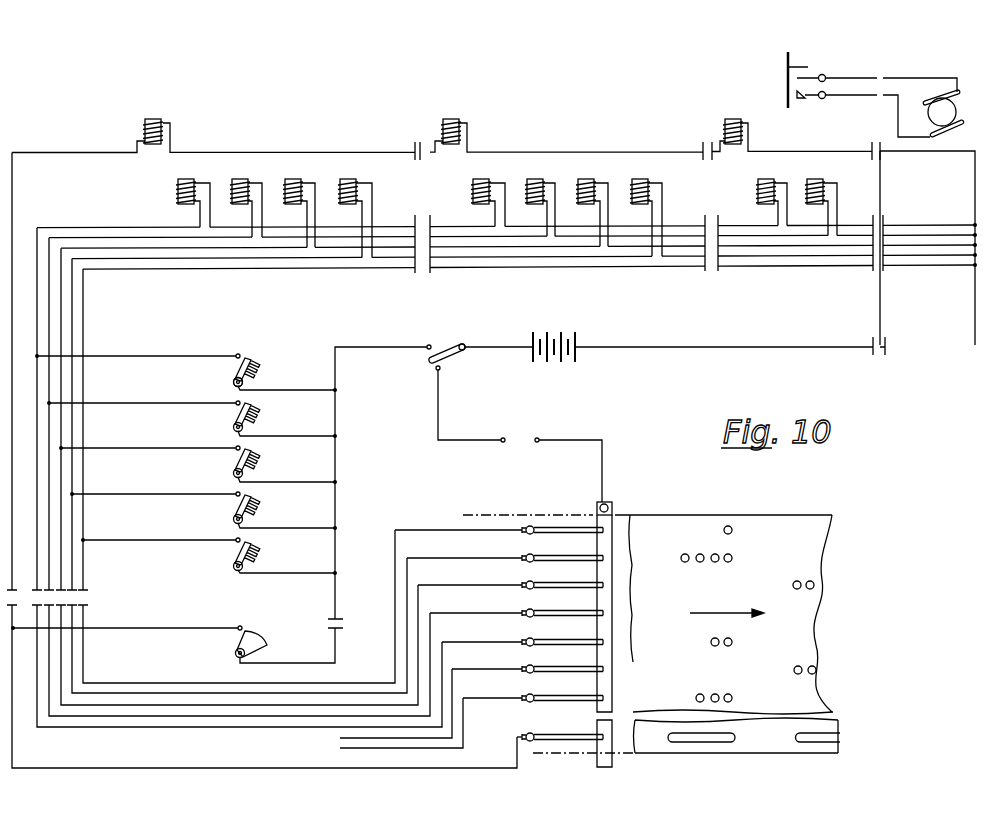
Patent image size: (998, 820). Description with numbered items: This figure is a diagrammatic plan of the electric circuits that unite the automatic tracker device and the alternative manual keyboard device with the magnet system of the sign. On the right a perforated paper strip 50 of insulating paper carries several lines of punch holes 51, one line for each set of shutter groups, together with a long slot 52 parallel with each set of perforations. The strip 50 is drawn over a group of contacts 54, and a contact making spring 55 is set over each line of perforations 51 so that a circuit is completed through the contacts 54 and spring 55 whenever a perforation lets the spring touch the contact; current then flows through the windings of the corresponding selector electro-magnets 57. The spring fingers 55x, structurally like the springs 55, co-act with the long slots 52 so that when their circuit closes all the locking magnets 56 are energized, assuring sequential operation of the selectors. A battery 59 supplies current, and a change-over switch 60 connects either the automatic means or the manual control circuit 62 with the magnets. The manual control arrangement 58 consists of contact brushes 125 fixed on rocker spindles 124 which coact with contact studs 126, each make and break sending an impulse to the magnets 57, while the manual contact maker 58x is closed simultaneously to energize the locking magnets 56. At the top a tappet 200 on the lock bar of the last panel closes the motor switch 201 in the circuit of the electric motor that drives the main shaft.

The perforated paper strip 50 is at (726, 634).
The punch holes 51 is at (728, 562).
The long slot 52 is at (702, 742).
The contacts 54 is at (612, 505).
The contact making spring 55 is at (557, 558).
The spring fingers 55x is at (563, 740).
The locking magnets 56 is at (138, 131).
The selector electro-magnets 57 is at (506, 206).
The manual control arrangement 58 is at (186, 450).
The manual contact maker 58x is at (177, 637).
The battery 59 is at (556, 332).
The change-over switch 60 is at (450, 342).
The manual control circuit 62 is at (353, 346).
The rocker spindle 124 is at (233, 381).
The contact brush 125 is at (258, 366).
The contact stud 126 is at (235, 352).
The tappet 200 is at (808, 67).
The motor switch 201 is at (807, 99).